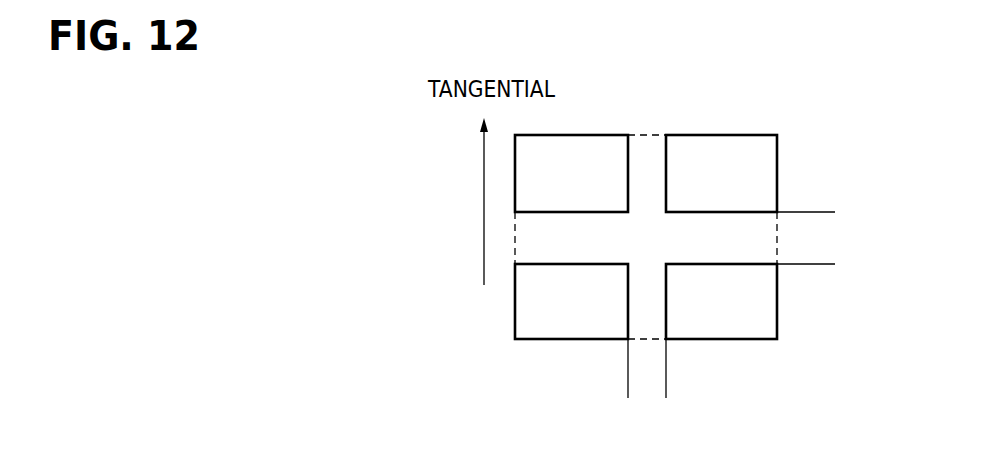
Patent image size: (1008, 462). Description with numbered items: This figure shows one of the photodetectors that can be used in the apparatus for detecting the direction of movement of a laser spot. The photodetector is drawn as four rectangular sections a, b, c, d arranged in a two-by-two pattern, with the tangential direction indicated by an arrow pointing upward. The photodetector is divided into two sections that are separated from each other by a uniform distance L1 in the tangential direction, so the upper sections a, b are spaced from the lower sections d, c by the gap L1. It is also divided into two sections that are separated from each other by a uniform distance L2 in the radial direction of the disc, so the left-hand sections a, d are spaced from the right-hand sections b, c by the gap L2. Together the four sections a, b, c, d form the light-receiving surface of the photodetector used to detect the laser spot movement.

The photodetector section a is at (571, 173).
The photodetector section b is at (721, 173).
The photodetector section c is at (721, 301).
The photodetector section d is at (571, 301).
The uniform distance in the tangential direction L1 is at (821, 212).
The uniform distance in the radial direction L2 is at (698, 382).